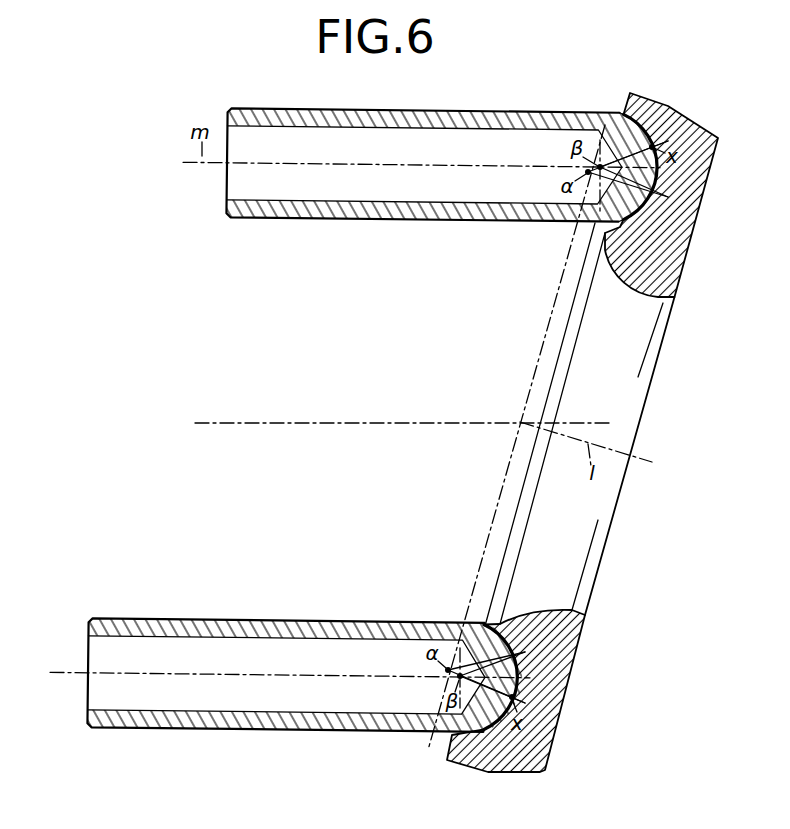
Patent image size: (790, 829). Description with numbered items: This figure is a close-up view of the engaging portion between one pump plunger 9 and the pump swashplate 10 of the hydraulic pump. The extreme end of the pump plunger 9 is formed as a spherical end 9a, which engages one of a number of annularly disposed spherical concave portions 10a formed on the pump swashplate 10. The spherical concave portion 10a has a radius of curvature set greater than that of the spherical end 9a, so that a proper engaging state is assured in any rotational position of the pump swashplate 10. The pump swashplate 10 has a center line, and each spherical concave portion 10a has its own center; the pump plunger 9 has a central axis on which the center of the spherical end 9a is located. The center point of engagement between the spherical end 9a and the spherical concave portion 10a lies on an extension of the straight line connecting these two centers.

The pump plunger 9 is at (442, 109).
The spherical end 9a is at (626, 117).
The pump swashplate 10 is at (706, 190).
The spherical concave portion 10a is at (623, 228).